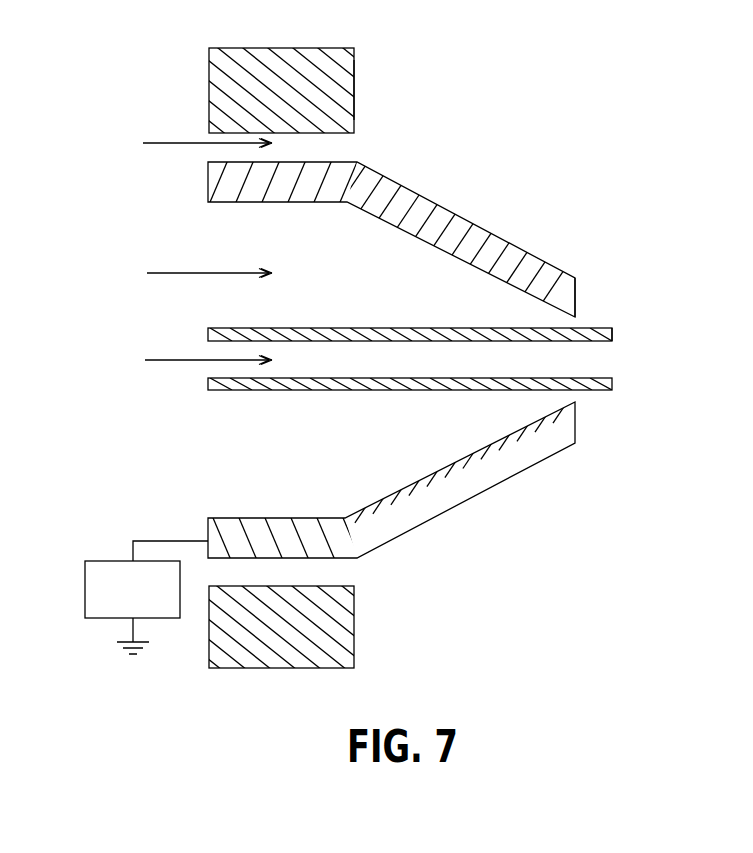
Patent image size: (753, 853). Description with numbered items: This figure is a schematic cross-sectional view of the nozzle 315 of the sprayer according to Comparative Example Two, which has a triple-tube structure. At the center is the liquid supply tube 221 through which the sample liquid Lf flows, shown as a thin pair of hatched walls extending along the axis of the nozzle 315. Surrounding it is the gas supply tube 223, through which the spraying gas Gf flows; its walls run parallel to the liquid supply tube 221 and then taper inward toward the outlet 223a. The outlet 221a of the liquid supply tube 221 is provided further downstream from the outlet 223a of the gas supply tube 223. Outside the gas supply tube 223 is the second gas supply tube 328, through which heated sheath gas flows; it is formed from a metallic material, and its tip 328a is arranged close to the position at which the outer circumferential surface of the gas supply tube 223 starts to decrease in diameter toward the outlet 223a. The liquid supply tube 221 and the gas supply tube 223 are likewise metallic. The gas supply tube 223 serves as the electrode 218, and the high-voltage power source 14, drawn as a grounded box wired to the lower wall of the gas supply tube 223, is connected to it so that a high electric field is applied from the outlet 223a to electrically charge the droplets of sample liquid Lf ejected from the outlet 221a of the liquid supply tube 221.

The nozzle 315 is at (176, 63).
The second gas supply tube 328 is at (300, 62).
The tip of second gas supply tube 328a is at (354, 95).
The gas supply tube 223 is at (208, 188).
The outlet of gas supply tube 223a is at (577, 299).
The electrode 218 is at (573, 245).
The liquid supply tube 221 is at (208, 334).
The outlet of liquid supply tube 221a is at (613, 335).
The high-voltage power source 14 is at (85, 588).